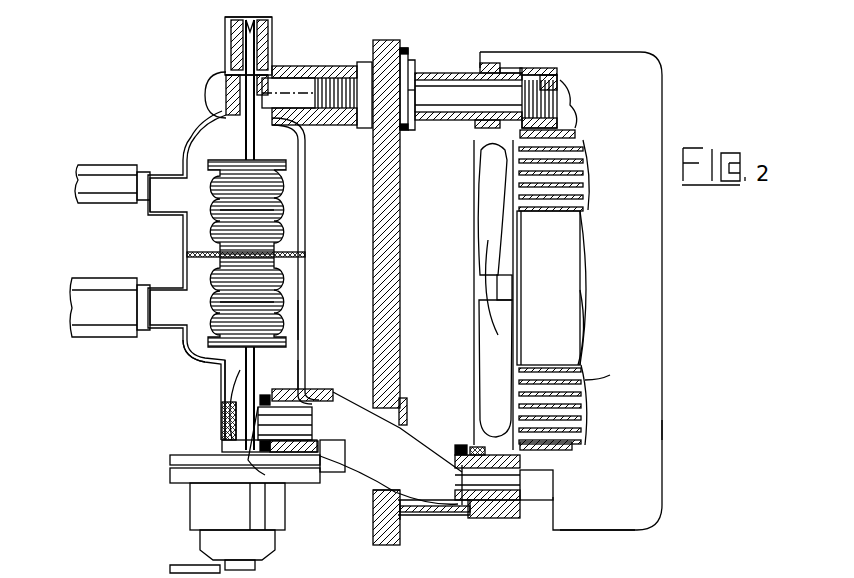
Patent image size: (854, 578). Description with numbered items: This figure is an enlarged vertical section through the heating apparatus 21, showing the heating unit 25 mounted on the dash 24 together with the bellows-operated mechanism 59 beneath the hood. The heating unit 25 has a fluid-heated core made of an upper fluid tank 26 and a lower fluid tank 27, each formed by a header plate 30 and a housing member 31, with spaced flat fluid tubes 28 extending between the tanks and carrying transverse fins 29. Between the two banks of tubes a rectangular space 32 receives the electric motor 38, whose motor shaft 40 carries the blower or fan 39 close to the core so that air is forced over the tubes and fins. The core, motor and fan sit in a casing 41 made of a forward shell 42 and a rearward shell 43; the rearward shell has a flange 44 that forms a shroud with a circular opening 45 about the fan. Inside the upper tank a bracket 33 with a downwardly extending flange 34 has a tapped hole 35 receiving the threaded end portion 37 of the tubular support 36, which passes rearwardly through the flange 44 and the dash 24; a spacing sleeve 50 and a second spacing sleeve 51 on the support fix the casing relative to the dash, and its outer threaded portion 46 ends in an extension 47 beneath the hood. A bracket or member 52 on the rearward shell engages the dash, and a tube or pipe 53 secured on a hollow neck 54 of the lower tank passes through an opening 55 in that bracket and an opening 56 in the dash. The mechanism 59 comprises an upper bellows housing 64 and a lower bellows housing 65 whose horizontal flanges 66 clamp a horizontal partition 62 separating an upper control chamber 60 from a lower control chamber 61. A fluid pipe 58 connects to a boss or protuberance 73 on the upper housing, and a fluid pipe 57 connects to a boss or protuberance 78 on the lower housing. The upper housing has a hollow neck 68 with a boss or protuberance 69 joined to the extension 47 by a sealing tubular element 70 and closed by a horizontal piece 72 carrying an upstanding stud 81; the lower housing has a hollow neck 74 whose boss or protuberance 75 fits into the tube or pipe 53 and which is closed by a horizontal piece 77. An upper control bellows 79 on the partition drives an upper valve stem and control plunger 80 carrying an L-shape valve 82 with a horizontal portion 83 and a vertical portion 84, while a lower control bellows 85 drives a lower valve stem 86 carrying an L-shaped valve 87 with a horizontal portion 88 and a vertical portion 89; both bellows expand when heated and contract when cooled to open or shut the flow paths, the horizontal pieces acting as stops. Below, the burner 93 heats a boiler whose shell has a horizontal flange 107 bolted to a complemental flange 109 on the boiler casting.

The heating apparatus 21 is at (145, 410).
The dash 24 is at (373, 165).
The heating unit 25 is at (600, 528).
The upper fluid tank 26 is at (575, 120).
The lower fluid tank 27 is at (520, 510).
The fluid tubes 28 is at (600, 380).
The fins 29 is at (585, 195).
The header plate 30 is at (572, 134).
The housing member 31 is at (550, 80).
The rectangular space 32 is at (575, 360).
The bracket 33 is at (557, 75).
The downwardly extending flange 34 is at (585, 155).
The tapped hole 35 is at (557, 95).
The tubular support 36 is at (448, 85).
The threaded end portion 37 is at (416, 95).
The electric motor 38 is at (565, 265).
The blower or fan 39 is at (485, 170).
The motor shaft 40 is at (497, 290).
The casing 41 is at (660, 500).
The forward shell 42 is at (662, 430).
The rearward shell 43 is at (495, 500).
The flange 44 is at (470, 72).
The circular opening 45 is at (445, 405).
The outer threaded portion 46 is at (410, 120).
The extension 47 is at (355, 62).
The spacing sleeve 50 is at (512, 70).
The second spacing sleeve 51 is at (412, 45).
The bracket or member 52 is at (402, 510).
The tube or pipe 53 is at (345, 458).
The hollow neck 54 is at (470, 512).
The opening 55 is at (450, 425).
The opening 56 is at (372, 488).
The fluid pipe 57 is at (95, 285).
The fluid pipe 58 is at (100, 170).
The mechanism 59 is at (100, 75).
The upper control chamber 60 is at (290, 192).
The lower control chamber 61 is at (305, 318).
The horizontal partition 62 is at (305, 240).
The upper bellows housing 64 is at (188, 150).
The lower bellows housing 65 is at (192, 358).
The horizontal flange 66 is at (305, 255).
The hollow neck 68 is at (210, 115).
The boss or protuberance 69 is at (260, 58).
The tubular element 70 is at (362, 62).
The horizontal piece 72 is at (257, 80).
The boss or protuberance 73 is at (160, 170).
The hollow neck 74 is at (210, 385).
The boss or protuberance 75 is at (300, 380).
The horizontal piece 77 is at (262, 475).
The boss or protuberance 78 is at (165, 280).
The upper control bellows 79 is at (270, 224).
The upper valve stem and control plunger 80 is at (300, 128).
The upstanding stud 81 is at (232, 36).
The L-shape valve 82 is at (228, 70).
The horizontal portion 83 is at (260, 22).
The vertical portion 84 is at (228, 88).
The lower control bellows 85 is at (270, 293).
The lower valve stem 86 is at (295, 408).
The L-shaped valve 87 is at (222, 446).
The horizontal portion 88 is at (250, 470).
The vertical portion 89 is at (222, 410).
The burner 93 is at (205, 545).
The horizontal flange 107 is at (170, 460).
The flange 109 is at (172, 480).